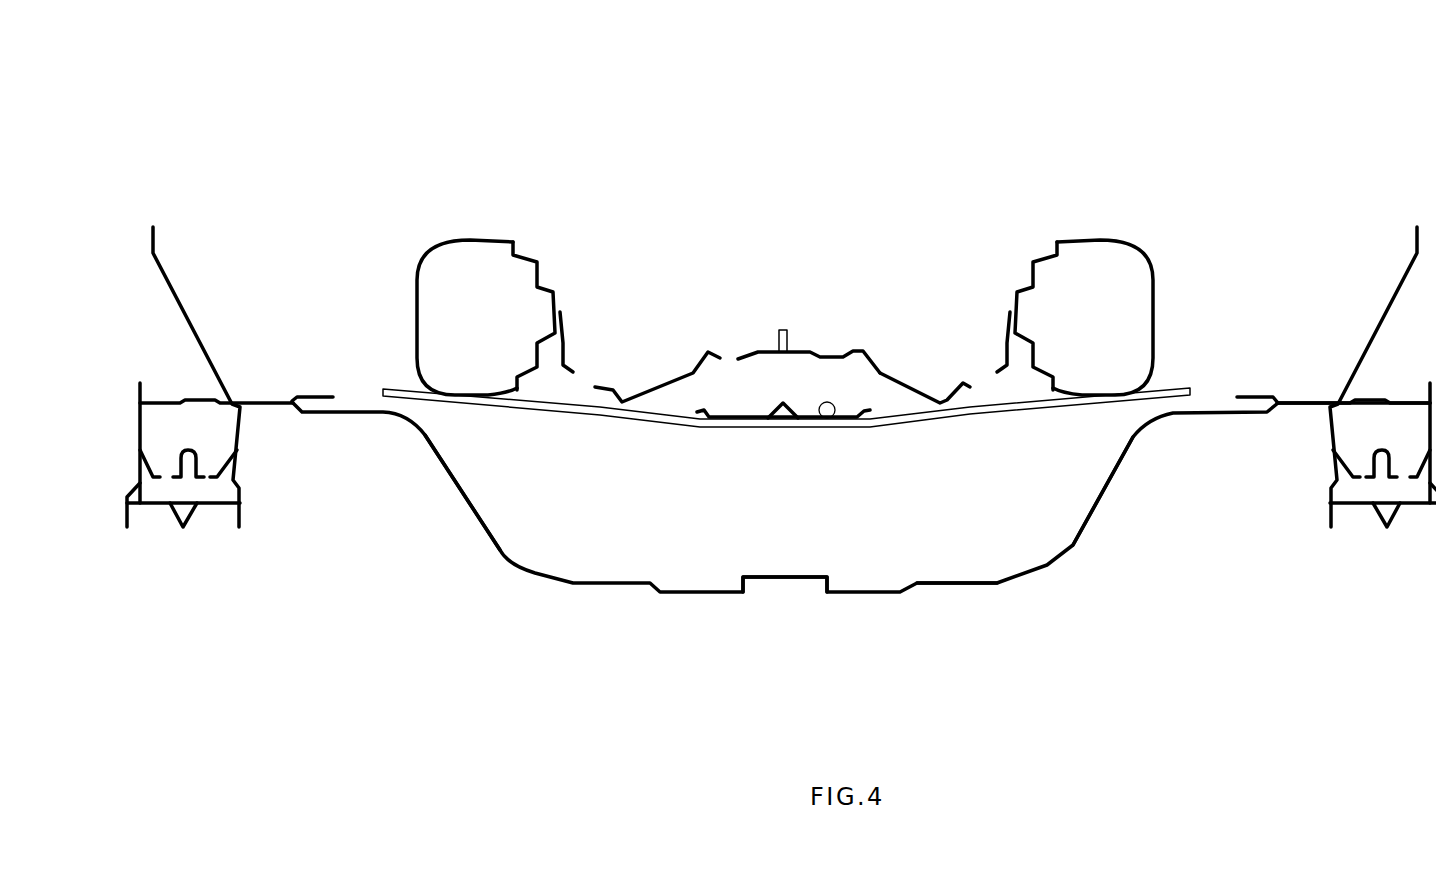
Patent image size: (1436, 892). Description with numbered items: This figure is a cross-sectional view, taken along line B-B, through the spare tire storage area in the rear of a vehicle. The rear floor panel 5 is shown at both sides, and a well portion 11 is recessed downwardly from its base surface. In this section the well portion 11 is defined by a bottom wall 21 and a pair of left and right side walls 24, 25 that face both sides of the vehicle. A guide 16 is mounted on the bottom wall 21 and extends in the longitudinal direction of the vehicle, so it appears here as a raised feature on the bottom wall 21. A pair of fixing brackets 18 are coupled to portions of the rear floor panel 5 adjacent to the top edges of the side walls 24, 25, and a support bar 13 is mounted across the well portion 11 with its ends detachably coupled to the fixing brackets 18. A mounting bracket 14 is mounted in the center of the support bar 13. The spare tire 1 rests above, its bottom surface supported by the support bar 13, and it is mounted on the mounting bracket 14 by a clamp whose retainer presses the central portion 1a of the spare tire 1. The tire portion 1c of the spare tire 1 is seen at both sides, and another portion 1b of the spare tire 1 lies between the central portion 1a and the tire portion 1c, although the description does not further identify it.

The spare tire 1 is at (1147, 217).
The central portion 1a is at (812, 350).
The seat frame side portion 1b is at (654, 383).
The tire portion 1c is at (476, 240).
The rear floor panel 5 is at (266, 401).
The well portion 11 is at (742, 501).
The support bar 13 is at (608, 419).
The mounting bracket 14 is at (827, 419).
The guide 16 is at (782, 574).
The fixing bracket 18 is at (310, 397).
The bottom wall 21 is at (953, 582).
The side wall 24 is at (460, 499).
The side wall 25 is at (1107, 490).